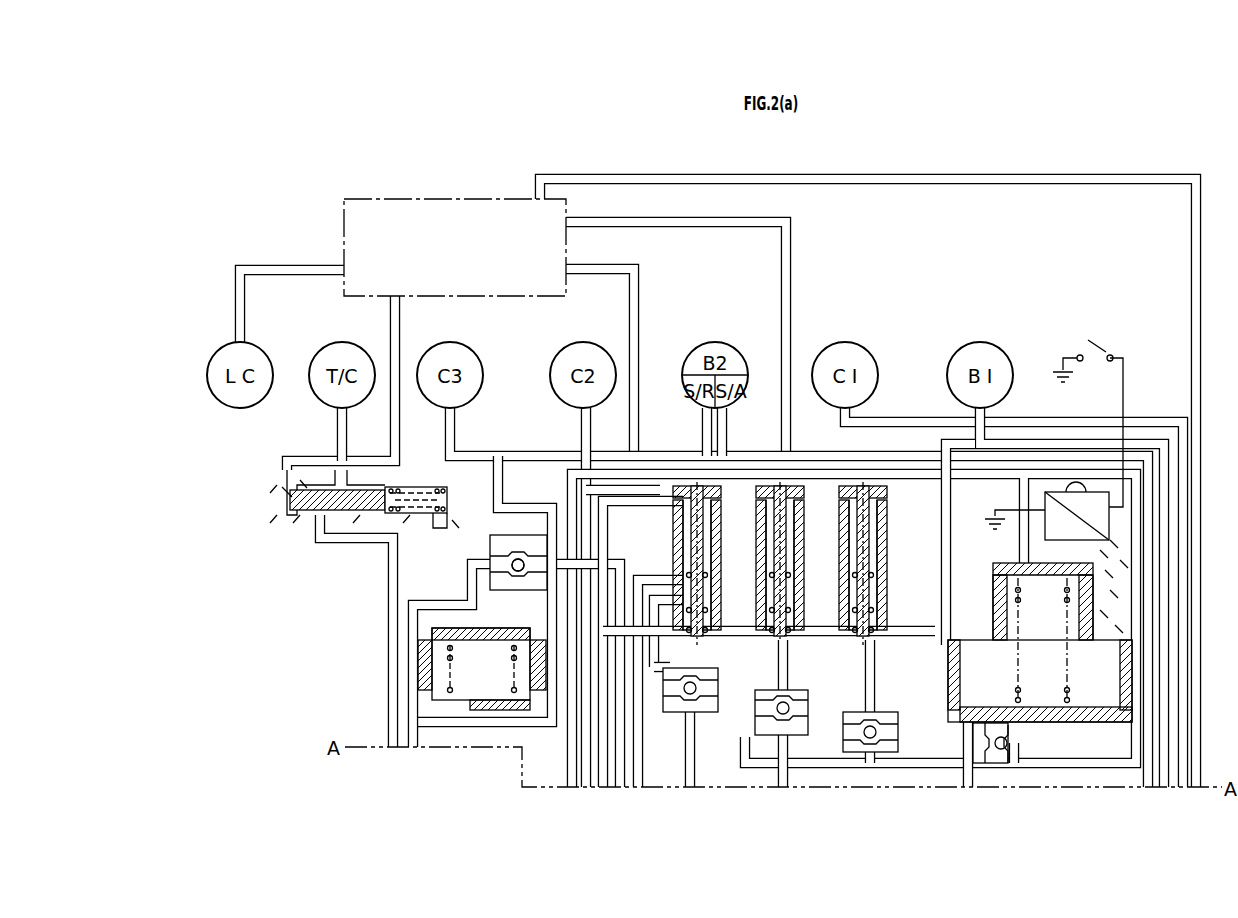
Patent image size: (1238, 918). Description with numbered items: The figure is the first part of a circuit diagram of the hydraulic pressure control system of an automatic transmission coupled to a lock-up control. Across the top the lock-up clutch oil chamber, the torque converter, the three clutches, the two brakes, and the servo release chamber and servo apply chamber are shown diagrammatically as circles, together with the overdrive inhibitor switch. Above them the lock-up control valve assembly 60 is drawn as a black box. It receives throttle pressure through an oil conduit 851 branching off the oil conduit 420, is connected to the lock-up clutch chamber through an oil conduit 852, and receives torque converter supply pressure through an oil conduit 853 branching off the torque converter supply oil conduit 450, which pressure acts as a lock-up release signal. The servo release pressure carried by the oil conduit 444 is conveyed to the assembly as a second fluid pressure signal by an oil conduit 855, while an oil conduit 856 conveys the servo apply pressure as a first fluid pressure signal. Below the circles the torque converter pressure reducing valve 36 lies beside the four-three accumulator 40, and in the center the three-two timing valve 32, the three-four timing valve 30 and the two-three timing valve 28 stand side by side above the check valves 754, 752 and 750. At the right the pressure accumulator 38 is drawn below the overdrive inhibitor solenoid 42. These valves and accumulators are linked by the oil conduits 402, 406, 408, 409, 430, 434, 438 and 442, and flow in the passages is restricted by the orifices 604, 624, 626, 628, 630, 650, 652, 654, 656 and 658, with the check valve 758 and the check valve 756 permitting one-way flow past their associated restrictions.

The lock-up control valve assembly 60 is at (428, 199).
The oil conduit 851 is at (977, 176).
The oil conduit 852 is at (285, 273).
The oil conduit 853 is at (400, 318).
The oil conduit 855 is at (641, 318).
The oil conduit 856 is at (793, 305).
The oil conduit 450 is at (337, 440).
The torque converter pressure reducing valve 36 is at (419, 472).
The orifice 624 is at (282, 487).
The orifice 628 is at (459, 422).
The oil conduit 442 is at (825, 790).
The oil conduit 434 is at (578, 445).
The oil conduit 430 is at (604, 470).
The oil conduit 444 is at (702, 432).
The orifice 630 is at (728, 420).
The orifice 626 is at (858, 420).
The oil conduit 408 is at (912, 418).
The oil conduit 438 is at (988, 415).
The oil conduit 409 is at (1134, 446).
The orifice 658 is at (520, 532).
The check valve 758 is at (521, 571).
The oil conduit 402 is at (445, 600).
The orifice 604 is at (999, 515).
The 3-2 timing valve 32 is at (731, 549).
The 3-4 timing valve 30 is at (809, 549).
The 2-3 timing valve 28 is at (873, 647).
The pressure accumulator 38 is at (980, 566).
The overdrive inhibitor solenoid 42 is at (1115, 545).
The oil conduit 406 is at (388, 568).
The 4-3 accumulator 40 is at (460, 585).
The oil conduit 420 is at (942, 610).
The check valve 754 is at (700, 686).
The check valve 752 is at (800, 700).
The check valve 750 is at (880, 716).
The check valve 756 is at (1020, 745).
The orifice 654 is at (690, 760).
The orifice 652 is at (780, 745).
The orifice 650 is at (868, 765).
The orifice 656 is at (968, 755).